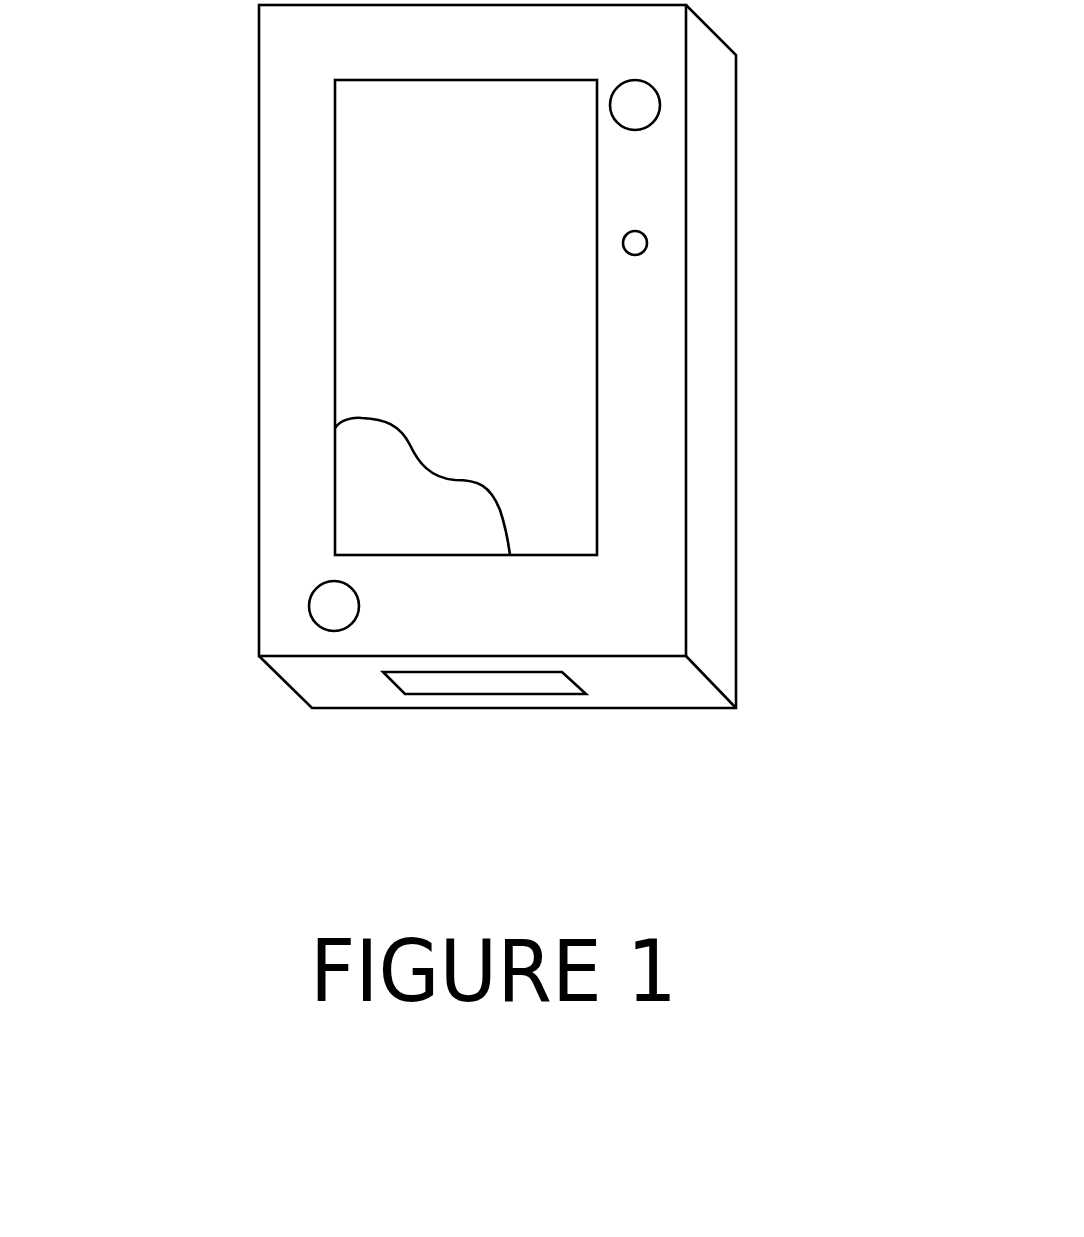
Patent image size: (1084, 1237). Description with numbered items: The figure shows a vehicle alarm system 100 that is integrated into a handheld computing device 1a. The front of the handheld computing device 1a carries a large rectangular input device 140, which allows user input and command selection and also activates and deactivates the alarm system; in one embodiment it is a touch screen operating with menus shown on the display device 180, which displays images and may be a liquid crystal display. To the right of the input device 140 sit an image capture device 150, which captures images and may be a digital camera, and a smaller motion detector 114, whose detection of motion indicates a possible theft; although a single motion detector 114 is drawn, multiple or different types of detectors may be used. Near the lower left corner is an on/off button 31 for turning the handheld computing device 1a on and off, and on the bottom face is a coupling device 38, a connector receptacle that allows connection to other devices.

The handheld computing device 1a is at (259, 245).
The input device 140 is at (466, 317).
The display device 180 is at (422, 486).
The image capture device 150 is at (660, 107).
The motion detector 114 is at (647, 243).
The on/off button 31 is at (309, 595).
The coupling device 38 is at (492, 682).
The vehicle alarm system 100 is at (863, 708).